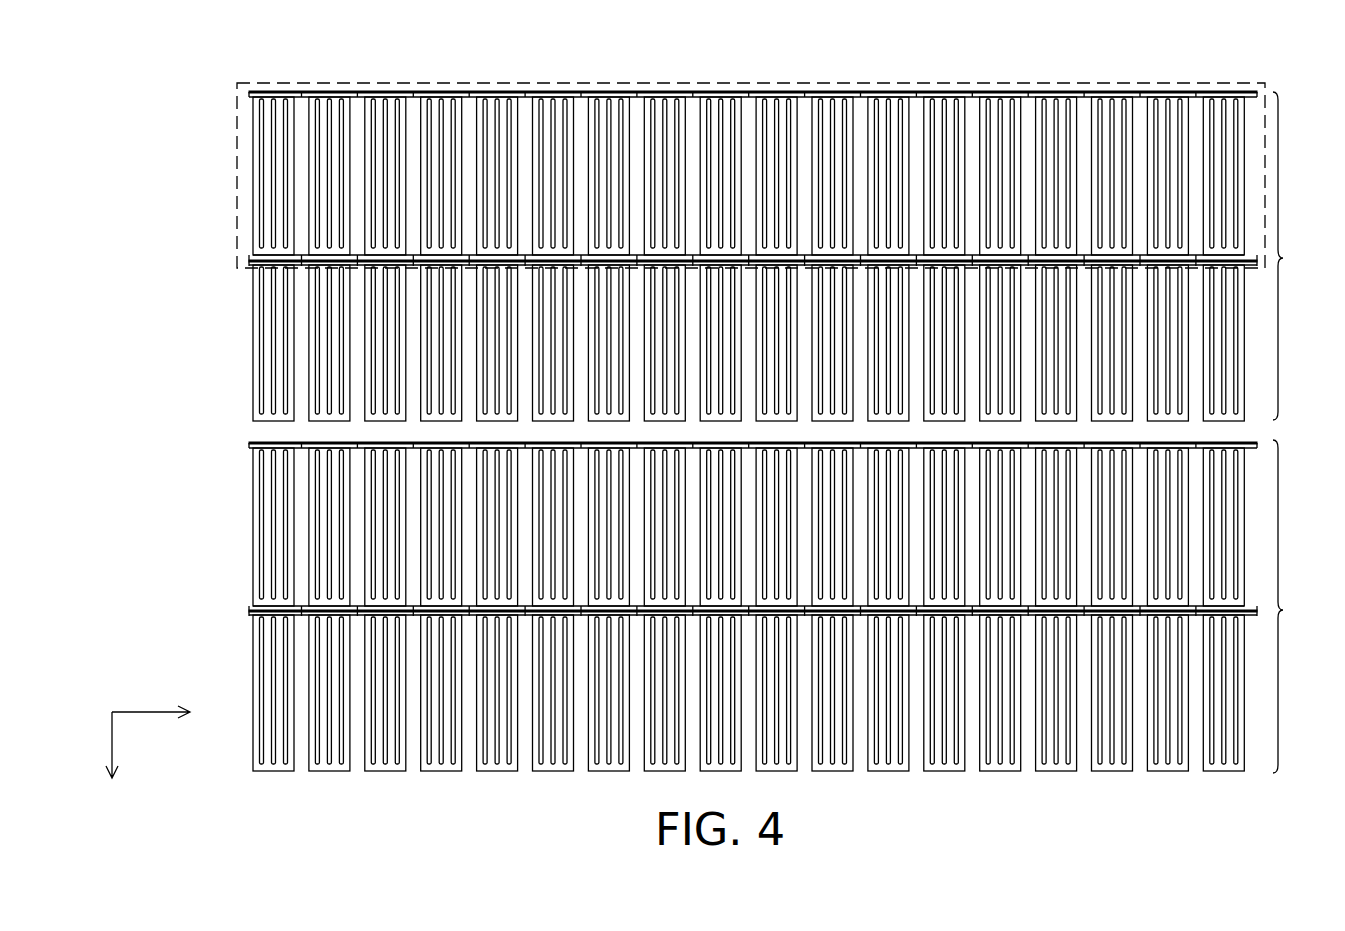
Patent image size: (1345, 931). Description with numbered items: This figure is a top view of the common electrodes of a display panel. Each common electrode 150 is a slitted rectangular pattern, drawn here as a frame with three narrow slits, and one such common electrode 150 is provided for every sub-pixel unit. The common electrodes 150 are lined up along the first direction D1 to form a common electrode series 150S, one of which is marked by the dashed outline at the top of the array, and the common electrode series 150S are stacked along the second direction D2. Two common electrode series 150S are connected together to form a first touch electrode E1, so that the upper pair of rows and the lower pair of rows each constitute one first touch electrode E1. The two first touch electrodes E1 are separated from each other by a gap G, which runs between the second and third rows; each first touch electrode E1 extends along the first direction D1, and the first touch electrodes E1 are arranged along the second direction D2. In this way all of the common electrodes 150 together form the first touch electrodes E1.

The common electrode 150 is at (278, 91).
The common electrode series 150S is at (237, 107).
The first touch electrode E1 is at (1292, 432).
The gap G is at (1240, 437).
The first direction D1 is at (167, 712).
The second direction D2 is at (111, 765).